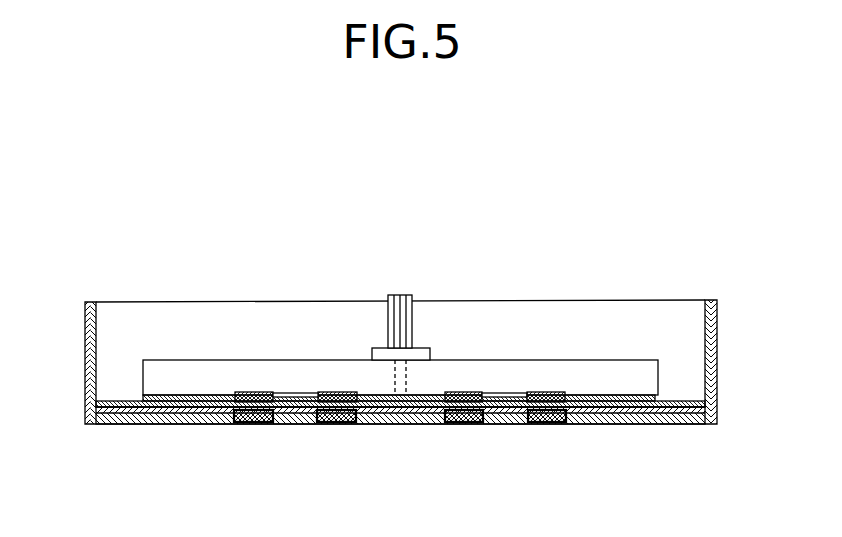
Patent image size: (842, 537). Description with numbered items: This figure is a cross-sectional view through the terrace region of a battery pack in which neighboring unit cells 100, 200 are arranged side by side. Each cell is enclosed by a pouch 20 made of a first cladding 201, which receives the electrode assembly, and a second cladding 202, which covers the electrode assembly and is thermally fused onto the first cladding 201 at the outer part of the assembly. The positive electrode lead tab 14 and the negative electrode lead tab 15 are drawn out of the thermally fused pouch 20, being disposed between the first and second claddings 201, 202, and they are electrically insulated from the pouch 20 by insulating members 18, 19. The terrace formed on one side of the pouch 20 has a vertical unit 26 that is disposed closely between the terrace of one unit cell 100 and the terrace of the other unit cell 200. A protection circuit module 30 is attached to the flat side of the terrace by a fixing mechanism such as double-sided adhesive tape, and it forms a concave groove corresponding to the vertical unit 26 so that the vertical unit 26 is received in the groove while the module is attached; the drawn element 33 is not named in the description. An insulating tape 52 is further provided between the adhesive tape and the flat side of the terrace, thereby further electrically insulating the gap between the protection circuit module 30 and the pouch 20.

The unit cell 100 is at (78, 359).
The unit cell 200 is at (724, 354).
The pouch 20 is at (172, 474).
The first cladding 201 is at (154, 413).
The second cladding 202 is at (114, 422).
The insulating tape 52 is at (118, 402).
The protection circuit module 30 is at (548, 370).
The bearing holder / pedestal 33 is at (418, 353).
The vertical unit 26 is at (400, 295).
The positive electrode lead tab 14 is at (243, 410).
The negative electrode lead tab 15 is at (323, 410).
The insulating member 18 is at (266, 402).
The insulating member 19 is at (348, 402).